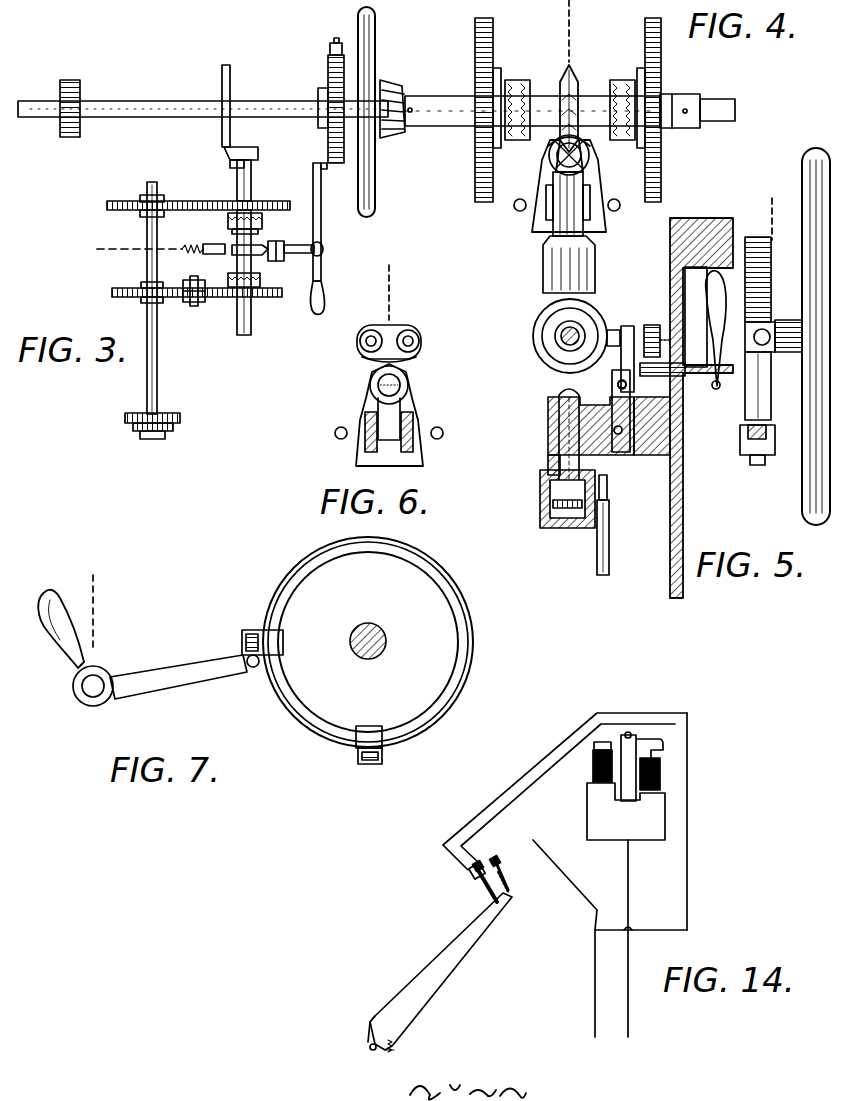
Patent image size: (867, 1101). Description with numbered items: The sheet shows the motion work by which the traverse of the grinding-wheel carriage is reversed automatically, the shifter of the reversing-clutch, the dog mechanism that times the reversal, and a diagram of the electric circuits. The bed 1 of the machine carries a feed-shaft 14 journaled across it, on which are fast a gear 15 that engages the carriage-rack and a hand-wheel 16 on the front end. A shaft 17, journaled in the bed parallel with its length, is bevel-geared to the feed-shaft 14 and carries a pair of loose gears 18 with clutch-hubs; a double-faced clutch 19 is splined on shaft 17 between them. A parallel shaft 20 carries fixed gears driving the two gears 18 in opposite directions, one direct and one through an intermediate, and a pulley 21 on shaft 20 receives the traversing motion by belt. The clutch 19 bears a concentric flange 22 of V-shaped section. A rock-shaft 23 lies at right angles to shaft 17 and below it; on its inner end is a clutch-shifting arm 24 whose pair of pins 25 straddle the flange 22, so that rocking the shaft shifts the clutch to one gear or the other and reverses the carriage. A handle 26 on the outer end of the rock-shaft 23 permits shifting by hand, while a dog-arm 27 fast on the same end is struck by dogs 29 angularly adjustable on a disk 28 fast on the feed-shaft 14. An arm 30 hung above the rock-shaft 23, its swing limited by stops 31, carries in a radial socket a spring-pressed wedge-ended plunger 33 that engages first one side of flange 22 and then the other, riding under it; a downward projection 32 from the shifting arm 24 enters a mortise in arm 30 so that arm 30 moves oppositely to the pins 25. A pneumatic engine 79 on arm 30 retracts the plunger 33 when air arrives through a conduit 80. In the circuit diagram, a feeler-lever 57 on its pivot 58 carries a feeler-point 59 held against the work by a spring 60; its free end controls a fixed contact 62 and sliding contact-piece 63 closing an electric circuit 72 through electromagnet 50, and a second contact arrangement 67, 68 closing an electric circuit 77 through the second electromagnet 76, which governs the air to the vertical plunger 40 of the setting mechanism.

In FIG. 5, the bed 1 is at (686, 520).
In FIG. 4, the feed-shaft 14 is at (130, 108).
In FIG. 7, the feed-shaft 14 is at (386, 639).
In FIG. 4, the gear 15 is at (73, 80).
In FIG. 4, the hand-wheel 16 is at (376, 32).
In FIG. 5, the hand-wheel 16 is at (810, 183).
In FIG. 4, the shaft 17 is at (712, 99).
In FIG. 3, the shaft 17 is at (252, 190).
In FIG. 5, the shaft 17 is at (566, 333).
In FIG. 4, the gears 18 is at (493, 42).
In FIG. 3, the gears 18 is at (280, 206).
In FIG. 4, the double-faced clutch 19 is at (522, 82).
In FIG. 3, the double-faced clutch 19 is at (266, 262).
In FIG. 5, the double-faced clutch 19 is at (555, 338).
In FIG. 3, the shaft 20 is at (157, 380).
In FIG. 3, the pulley 21 is at (172, 413).
In FIG. 4, the flange 22 is at (576, 74).
In FIG. 3, the flange 22 is at (238, 257).
In FIG. 5, the flange 22 is at (532, 352).
In FIG. 4, the rock-shaft 23 is at (556, 160).
In FIG. 3, the rock-shaft 23 is at (323, 252).
In FIG. 6, the rock-shaft 23 is at (376, 380).
In FIG. 5, the rock-shaft 23 is at (687, 405).
In FIG. 7, the rock-shaft 23 is at (90, 690).
In FIG. 4, the clutch-shifting arm 24 is at (552, 140).
In FIG. 3, the clutch-shifting arm 24 is at (280, 243).
In FIG. 6, the clutch-shifting arm 24 is at (398, 358).
In FIG. 5, the clutch-shifting arm 24 is at (630, 324).
In FIG. 3, the pins 25 is at (258, 244).
In FIG. 6, the pins 25 is at (411, 332).
In FIG. 5, the pins 25 is at (613, 328).
In FIG. 3, the handle 26 is at (323, 293).
In FIG. 5, the handle 26 is at (722, 294).
In FIG. 7, the handle 26 is at (62, 640).
In FIG. 3, the dog-arm 27 is at (322, 192).
In FIG. 5, the dog-arm 27 is at (748, 366).
In FIG. 7, the dog-arm 27 is at (183, 668).
In FIG. 4, the disk 28 is at (331, 135).
In FIG. 5, the disk 28 is at (760, 398).
In FIG. 7, the disk 28 is at (462, 649).
In FIG. 4, the dogs 29 is at (330, 55).
In FIG. 5, the dogs 29 is at (768, 457).
In FIG. 7, the dogs 29 is at (372, 742).
In FIG. 4, the arm 30 is at (595, 200).
In FIG. 6, the arm 30 is at (358, 446).
In FIG. 5, the arm 30 is at (652, 430).
In FIG. 4, the stops 31 is at (516, 211).
In FIG. 6, the stops 31 is at (334, 433).
In FIG. 6, the downward projection 32 is at (396, 418).
In FIG. 5, the downward projection 32 is at (624, 452).
In FIG. 4, the spring-pressed wedge-ended plunger 33 is at (584, 163).
In FIG. 3, the spring-pressed wedge-ended plunger 33 is at (218, 245).
In FIG. 5, the spring-pressed wedge-ended plunger 33 is at (558, 405).
In FIG. 14, the vertical plunger 40 is at (630, 734).
In FIG. 14, the electromagnet 50 is at (661, 778).
In FIG. 14, the feeler-lever 57 is at (445, 960).
In FIG. 14, the pivot 58 is at (373, 1051).
In FIG. 14, the feeler-point 59 is at (368, 1040).
In FIG. 14, the spring 60 is at (398, 1047).
In FIG. 14, the fixed electrical contact 62 is at (477, 882).
In FIG. 14, the endwise-sliding contact-piece 63 is at (463, 876).
In FIG. 14, the contact 67 is at (497, 866).
In FIG. 14, the contact-piece 68 is at (502, 885).
In FIG. 14, the electric circuit 72 is at (513, 791).
In FIG. 14, the second electromagnet 76 is at (595, 770).
In FIG. 14, the electric circuit 77 is at (688, 866).
In FIG. 4, the pneumatic engine 79 is at (548, 276).
In FIG. 5, the pneumatic engine 79 is at (548, 508).
In FIG. 5, the conduit 80 is at (610, 560).